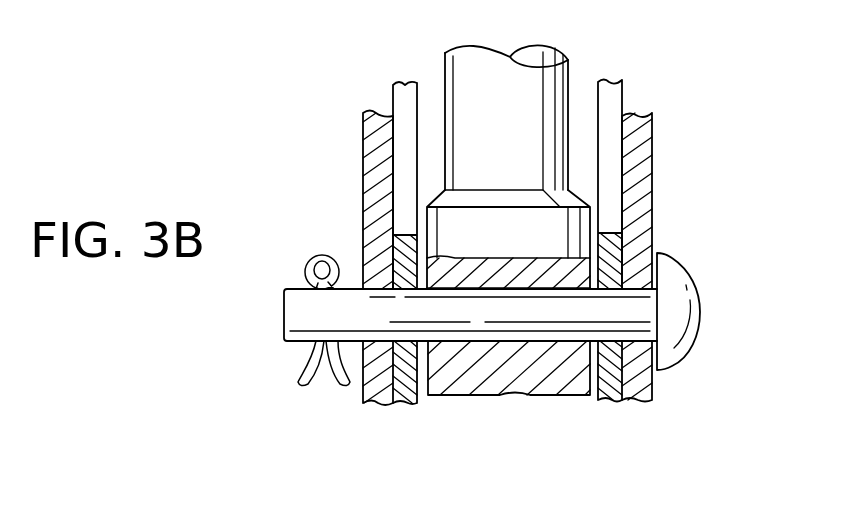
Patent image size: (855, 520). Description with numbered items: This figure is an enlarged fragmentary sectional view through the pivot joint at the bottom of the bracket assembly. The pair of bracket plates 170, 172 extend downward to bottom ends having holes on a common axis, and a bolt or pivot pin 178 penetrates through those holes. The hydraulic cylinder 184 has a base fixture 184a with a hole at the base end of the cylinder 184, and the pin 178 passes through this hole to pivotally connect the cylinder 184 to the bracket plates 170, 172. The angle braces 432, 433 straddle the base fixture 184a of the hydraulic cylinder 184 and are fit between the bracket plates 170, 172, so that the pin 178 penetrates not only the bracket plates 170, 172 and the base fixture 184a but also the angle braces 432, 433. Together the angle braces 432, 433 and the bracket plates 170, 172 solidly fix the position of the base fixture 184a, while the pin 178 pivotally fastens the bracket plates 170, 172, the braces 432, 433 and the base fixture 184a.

The bracket plate 170 is at (363, 190).
The bracket plate 172 is at (652, 153).
The bolt or pivot pin 178 is at (688, 273).
The hydraulic cylinder 184 is at (568, 67).
The base fixture 184a is at (533, 392).
The angle brace 432 is at (392, 93).
The angle brace 433 is at (622, 92).